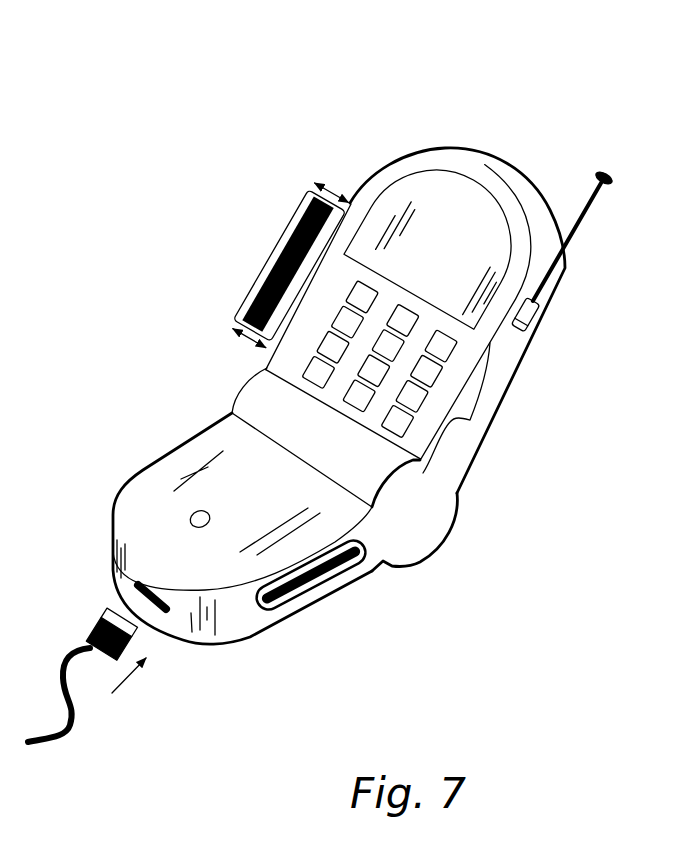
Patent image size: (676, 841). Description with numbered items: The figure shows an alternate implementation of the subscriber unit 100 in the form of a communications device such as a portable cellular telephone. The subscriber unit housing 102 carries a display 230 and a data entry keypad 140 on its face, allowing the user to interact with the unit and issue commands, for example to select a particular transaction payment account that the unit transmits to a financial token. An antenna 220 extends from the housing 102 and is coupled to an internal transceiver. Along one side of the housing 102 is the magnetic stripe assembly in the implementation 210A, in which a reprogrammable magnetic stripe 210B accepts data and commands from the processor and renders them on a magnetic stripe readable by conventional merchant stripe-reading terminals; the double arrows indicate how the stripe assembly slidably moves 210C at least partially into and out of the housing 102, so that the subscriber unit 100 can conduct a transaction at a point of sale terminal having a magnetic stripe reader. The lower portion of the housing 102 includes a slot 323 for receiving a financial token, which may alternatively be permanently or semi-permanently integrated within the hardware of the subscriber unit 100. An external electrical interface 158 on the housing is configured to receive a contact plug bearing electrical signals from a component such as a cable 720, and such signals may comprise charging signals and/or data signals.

The subscriber unit 100 is at (444, 120).
The housing 102 is at (386, 158).
The data entry keypad 140 is at (468, 424).
The external electrical interface 158 is at (150, 590).
The magnetic stripe assembly implementation 210A is at (259, 211).
The reprogrammable magnetic stripe 210B is at (270, 277).
The sliding movement 210C is at (256, 352).
The antenna 220 is at (586, 222).
The display 230 is at (447, 217).
The slot 323 is at (325, 588).
The cable 720 is at (55, 735).